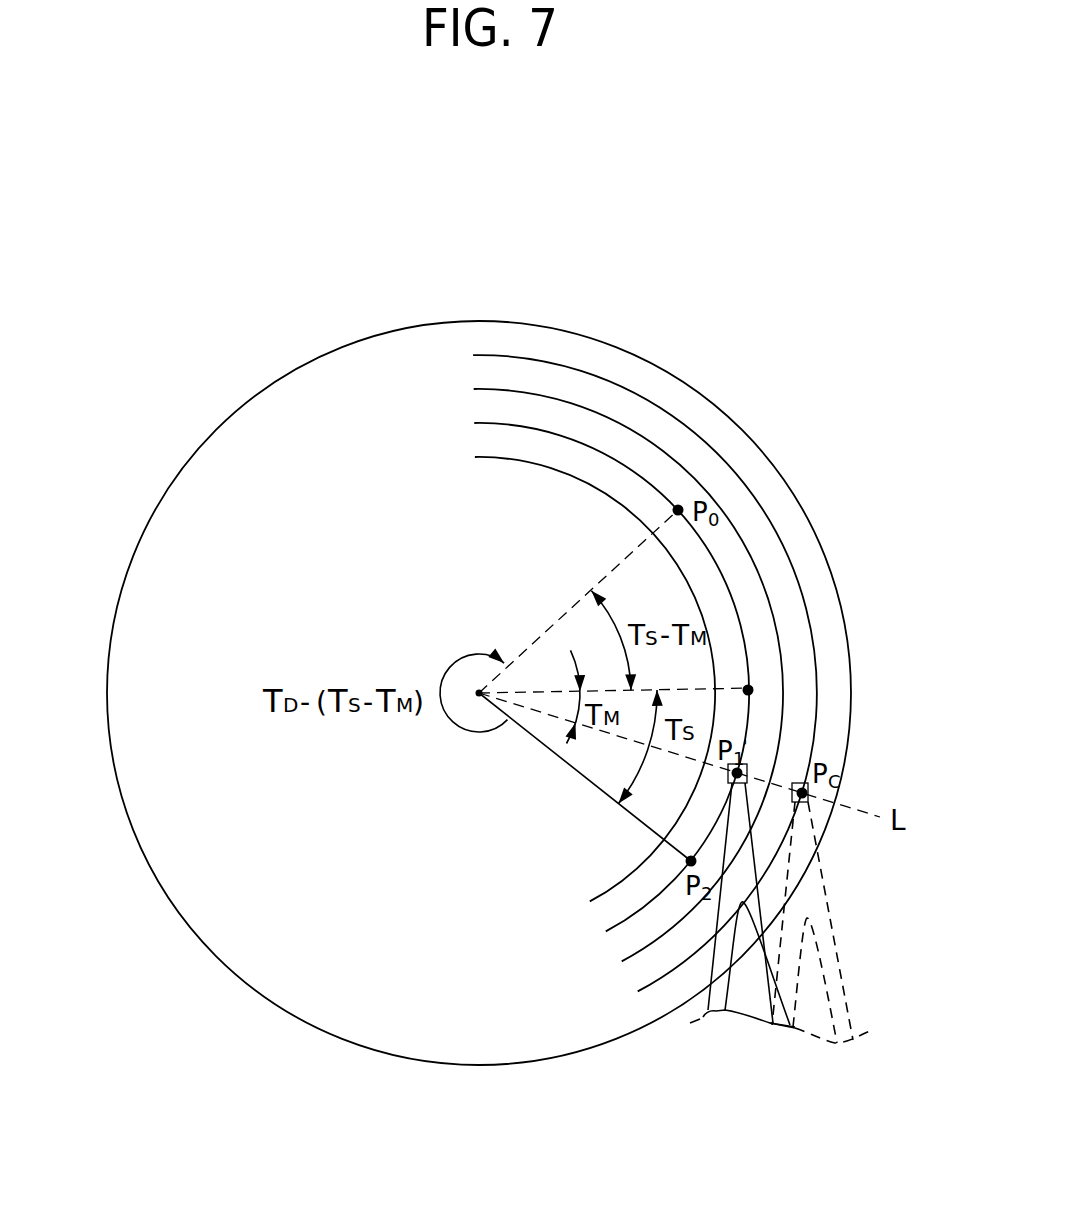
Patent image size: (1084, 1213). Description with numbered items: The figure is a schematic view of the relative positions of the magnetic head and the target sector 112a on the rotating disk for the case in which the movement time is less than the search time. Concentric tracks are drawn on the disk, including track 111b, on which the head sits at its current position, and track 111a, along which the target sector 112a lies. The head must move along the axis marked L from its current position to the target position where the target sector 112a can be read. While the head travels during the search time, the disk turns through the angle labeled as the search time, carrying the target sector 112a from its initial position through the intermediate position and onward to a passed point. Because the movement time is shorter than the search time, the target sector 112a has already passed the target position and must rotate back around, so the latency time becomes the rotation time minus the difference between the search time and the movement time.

The track 111a is at (471, 420).
The track 111b is at (472, 354).
The target sector 112a is at (761, 684).